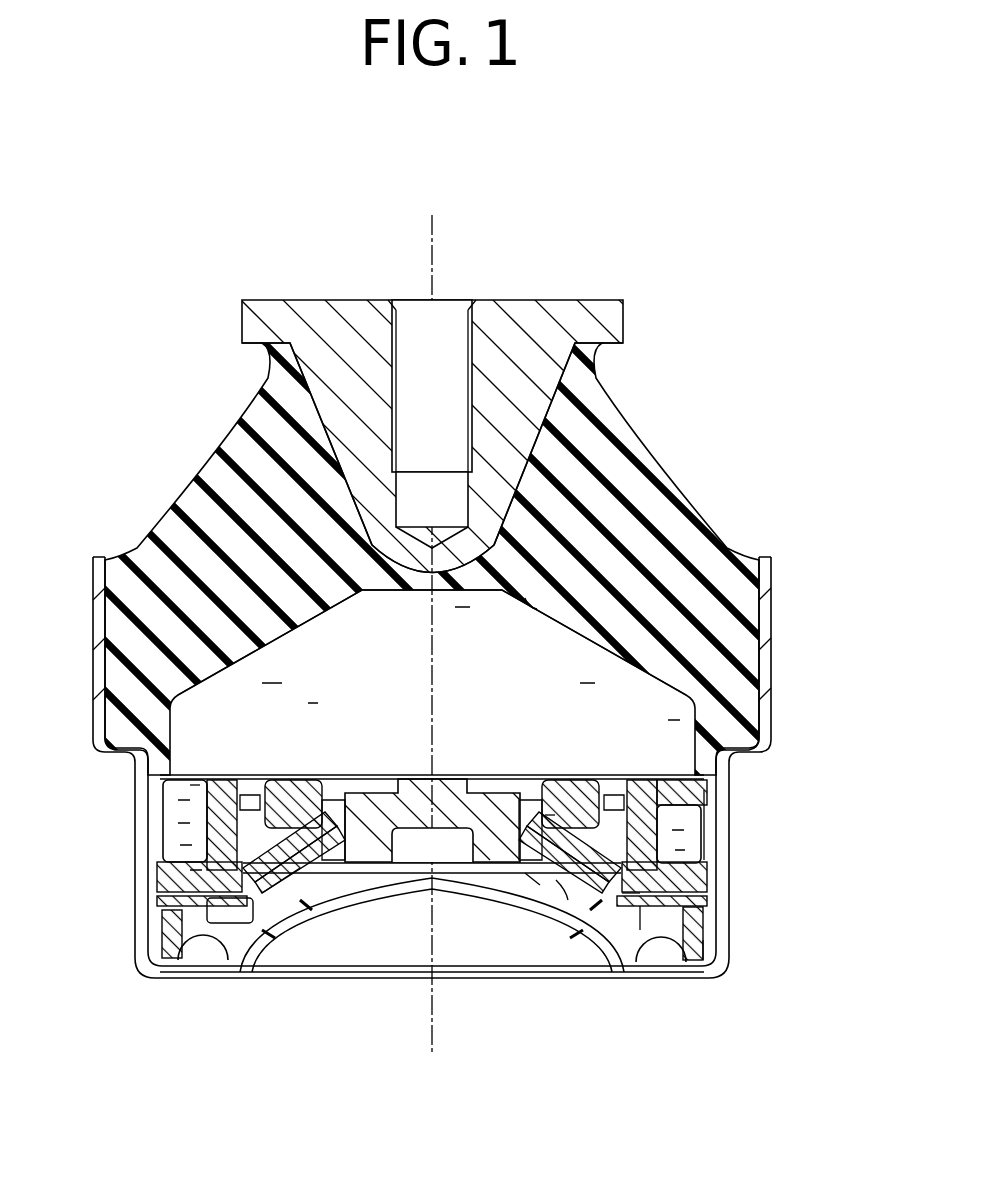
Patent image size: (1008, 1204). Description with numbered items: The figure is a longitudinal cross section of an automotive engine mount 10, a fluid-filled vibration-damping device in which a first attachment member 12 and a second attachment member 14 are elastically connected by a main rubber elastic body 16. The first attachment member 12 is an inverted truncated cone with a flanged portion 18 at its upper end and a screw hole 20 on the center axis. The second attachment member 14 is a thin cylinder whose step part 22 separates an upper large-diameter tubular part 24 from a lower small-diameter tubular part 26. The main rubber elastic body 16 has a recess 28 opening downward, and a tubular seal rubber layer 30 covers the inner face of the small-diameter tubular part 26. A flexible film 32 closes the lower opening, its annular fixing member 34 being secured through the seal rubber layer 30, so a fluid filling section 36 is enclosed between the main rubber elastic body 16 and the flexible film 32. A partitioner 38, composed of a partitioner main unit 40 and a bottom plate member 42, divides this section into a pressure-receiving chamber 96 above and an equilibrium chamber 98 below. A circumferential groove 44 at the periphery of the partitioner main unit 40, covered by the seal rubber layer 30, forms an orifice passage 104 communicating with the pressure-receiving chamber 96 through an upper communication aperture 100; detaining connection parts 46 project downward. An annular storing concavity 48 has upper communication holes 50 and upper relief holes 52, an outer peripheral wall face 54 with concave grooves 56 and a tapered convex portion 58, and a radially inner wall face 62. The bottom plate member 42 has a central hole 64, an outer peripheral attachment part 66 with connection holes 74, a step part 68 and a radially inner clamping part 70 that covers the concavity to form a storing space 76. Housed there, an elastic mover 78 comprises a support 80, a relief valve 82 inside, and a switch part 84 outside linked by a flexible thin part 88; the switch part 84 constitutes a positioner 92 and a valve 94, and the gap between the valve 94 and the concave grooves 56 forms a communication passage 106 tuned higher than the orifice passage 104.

The engine mount 10 is at (690, 310).
The first attachment member 12 is at (525, 292).
The second attachment member 14 is at (779, 675).
The main rubber elastic body 16 is at (636, 425).
The flanged portion 18 is at (276, 316).
The screw hole 20 is at (405, 332).
The step part 22 is at (748, 753).
The large-diameter tubular part 24 is at (765, 622).
The small-diameter tubular part 26 is at (723, 920).
The recess 28 is at (533, 605).
The seal rubber layer 30 is at (714, 836).
The flexible film 32 is at (445, 887).
The fixing member 34 is at (695, 927).
The fluid filling section 36 is at (340, 647).
The partitioner 38 is at (422, 772).
The partitioner main unit 40 is at (453, 805).
The bottom plate member 42 is at (668, 905).
The circumferential groove 44 is at (683, 862).
The detaining connection parts 46 is at (217, 917).
The storing concavity 48 is at (577, 817).
The upper communication holes 50 is at (610, 835).
The upper relief holes 52 is at (338, 825).
The outer peripheral wall face 54 is at (245, 848).
The concave grooves 56 is at (648, 915).
The convex portion 58 is at (630, 838).
The radially inner wall face 62 is at (343, 850).
The central hole 64 is at (530, 870).
The outer peripheral attachment part 66 is at (700, 945).
The step part 68 is at (633, 883).
The radially inner clamping part 70 is at (563, 893).
The connection holes 74 is at (248, 907).
The storing space 76 is at (547, 825).
The elastic mover 78 is at (300, 870).
The support 80 is at (300, 833).
The relief valve 82 is at (340, 850).
The switch part 84 is at (253, 805).
The thin part 88 is at (277, 840).
The positioner 92 is at (248, 836).
The valve 94 is at (628, 848).
The pressure-receiving chamber 96 is at (482, 658).
The equilibrium chamber 98 is at (600, 943).
The upper communication aperture 100 is at (200, 797).
The orifice passage 104 is at (183, 836).
The communication passage 106 is at (648, 805).